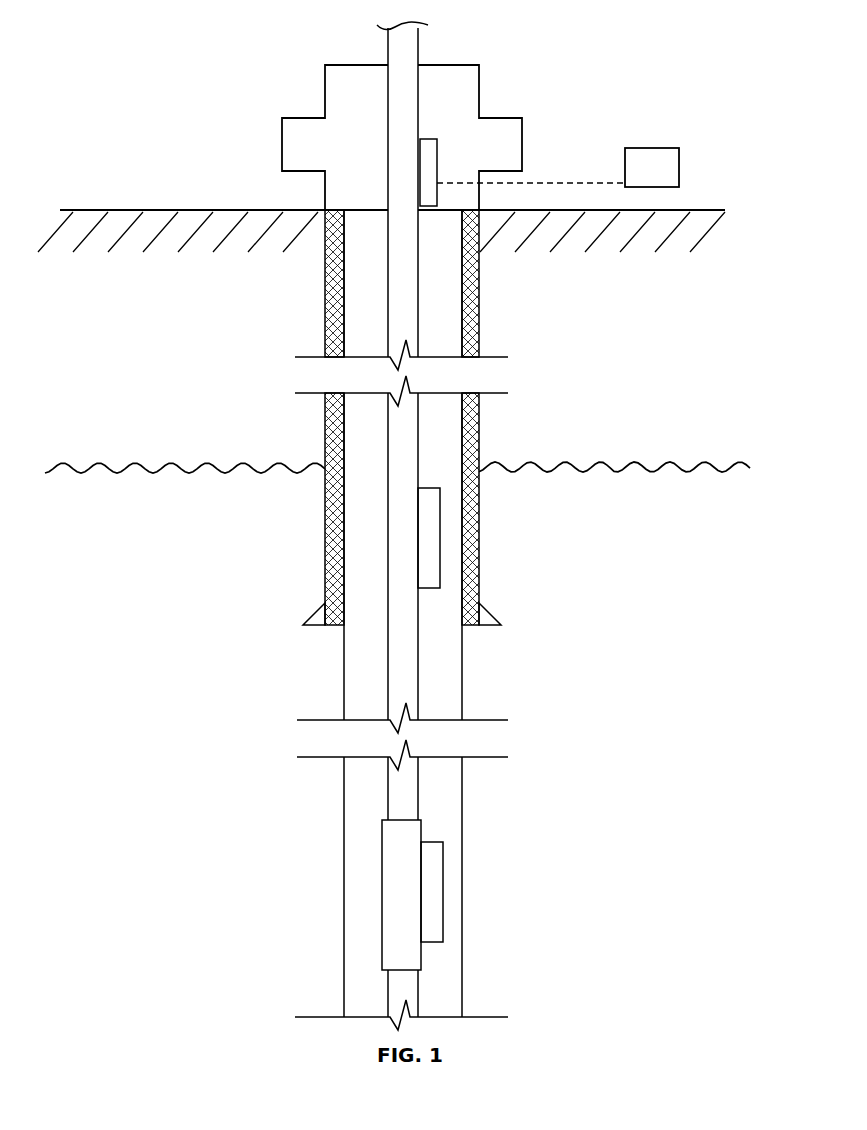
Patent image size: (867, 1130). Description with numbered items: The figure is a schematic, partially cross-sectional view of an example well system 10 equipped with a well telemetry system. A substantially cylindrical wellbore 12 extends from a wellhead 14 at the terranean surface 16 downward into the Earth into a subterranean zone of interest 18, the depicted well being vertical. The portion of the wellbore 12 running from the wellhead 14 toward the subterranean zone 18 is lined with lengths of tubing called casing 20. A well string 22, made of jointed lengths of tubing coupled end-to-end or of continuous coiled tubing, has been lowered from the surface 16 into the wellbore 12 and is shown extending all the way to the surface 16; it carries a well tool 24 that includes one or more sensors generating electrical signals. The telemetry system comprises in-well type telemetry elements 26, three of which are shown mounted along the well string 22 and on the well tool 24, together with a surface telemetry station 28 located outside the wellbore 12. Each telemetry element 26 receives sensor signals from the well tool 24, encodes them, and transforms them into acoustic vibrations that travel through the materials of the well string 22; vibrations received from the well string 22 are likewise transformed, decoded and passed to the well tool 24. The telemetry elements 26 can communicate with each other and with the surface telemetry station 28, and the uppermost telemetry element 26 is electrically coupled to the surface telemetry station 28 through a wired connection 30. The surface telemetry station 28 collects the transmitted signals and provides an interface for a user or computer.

The well system 10 is at (120, 52).
The wellbore 12 is at (363, 676).
The wellhead 14 is at (500, 137).
The terranean surface 16 is at (127, 210).
The subterranean zone of interest 18 is at (666, 575).
The casing 20 is at (480, 433).
The well string 22 is at (388, 797).
The well tool 24 is at (382, 893).
The in-well type telemetry element 26 is at (431, 139).
The surface telemetry station 28 is at (652, 148).
The wired connection 30 is at (540, 183).